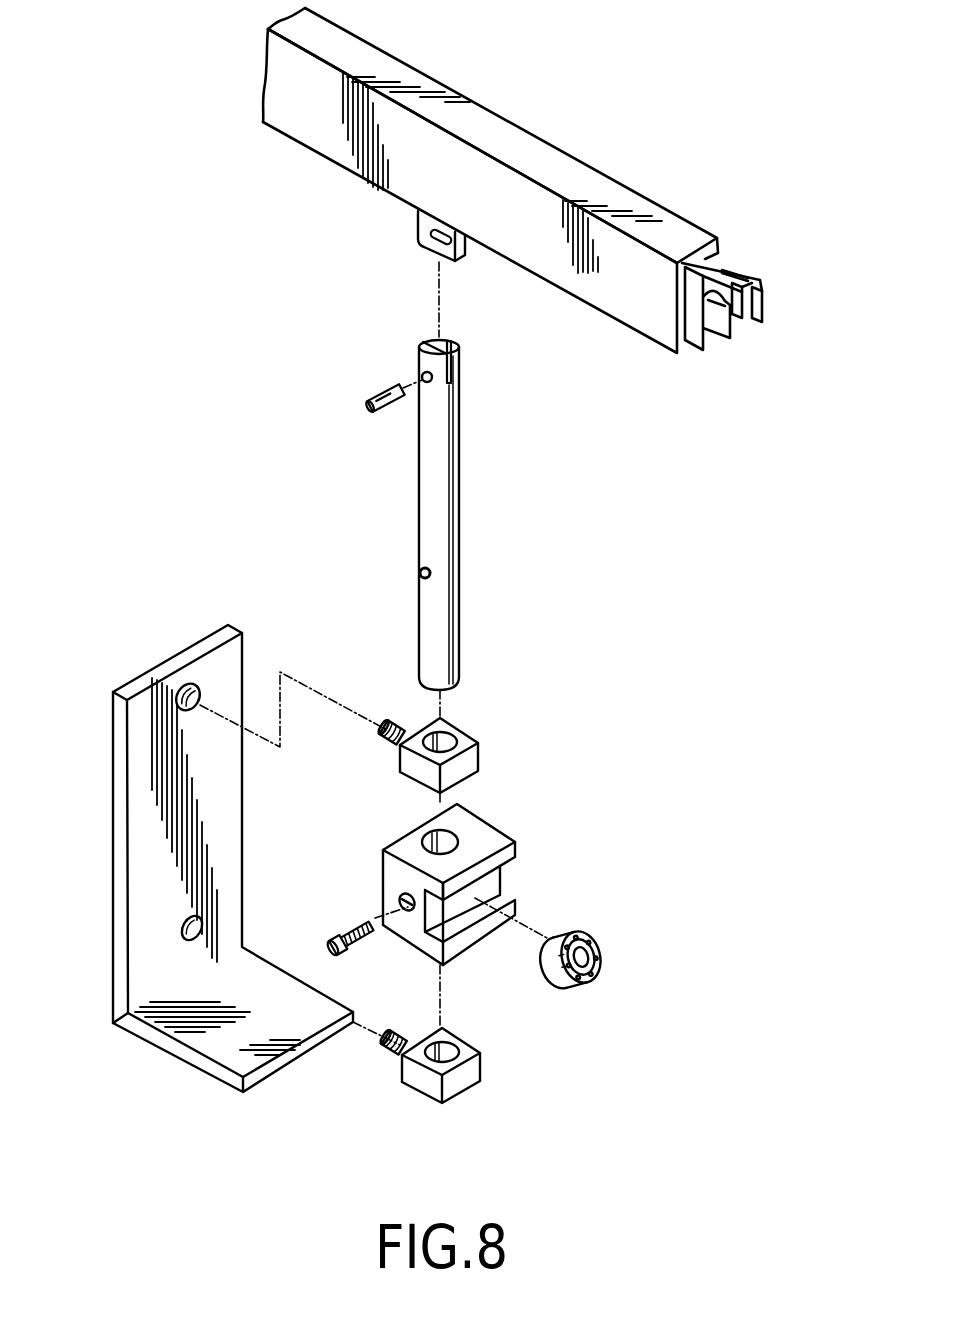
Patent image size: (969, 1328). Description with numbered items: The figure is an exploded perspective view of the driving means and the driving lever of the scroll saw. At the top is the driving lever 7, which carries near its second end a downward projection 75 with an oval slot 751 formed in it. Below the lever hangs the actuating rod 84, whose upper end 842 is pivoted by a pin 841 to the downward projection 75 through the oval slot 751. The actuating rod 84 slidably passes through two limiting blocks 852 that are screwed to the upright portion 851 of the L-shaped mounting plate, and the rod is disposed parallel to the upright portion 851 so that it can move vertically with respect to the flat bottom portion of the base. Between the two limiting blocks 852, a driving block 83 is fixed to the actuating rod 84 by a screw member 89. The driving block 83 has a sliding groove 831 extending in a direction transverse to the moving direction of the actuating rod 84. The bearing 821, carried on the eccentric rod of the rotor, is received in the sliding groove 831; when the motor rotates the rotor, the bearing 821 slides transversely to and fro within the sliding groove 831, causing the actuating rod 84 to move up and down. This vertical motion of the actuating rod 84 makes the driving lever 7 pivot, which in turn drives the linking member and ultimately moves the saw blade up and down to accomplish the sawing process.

The driving lever 7 is at (492, 128).
The downward projection 75 is at (415, 214).
The oval slot 751 is at (432, 244).
The actuating rod 84 is at (442, 508).
The pin 841 is at (380, 393).
The upper end 842 is at (457, 352).
The limiting blocks 852 is at (470, 763).
The driving block 83 is at (498, 827).
The sliding groove 831 is at (512, 873).
The bearing 821 is at (581, 924).
The screw member 89 is at (341, 953).
The upright portion 851 is at (120, 882).